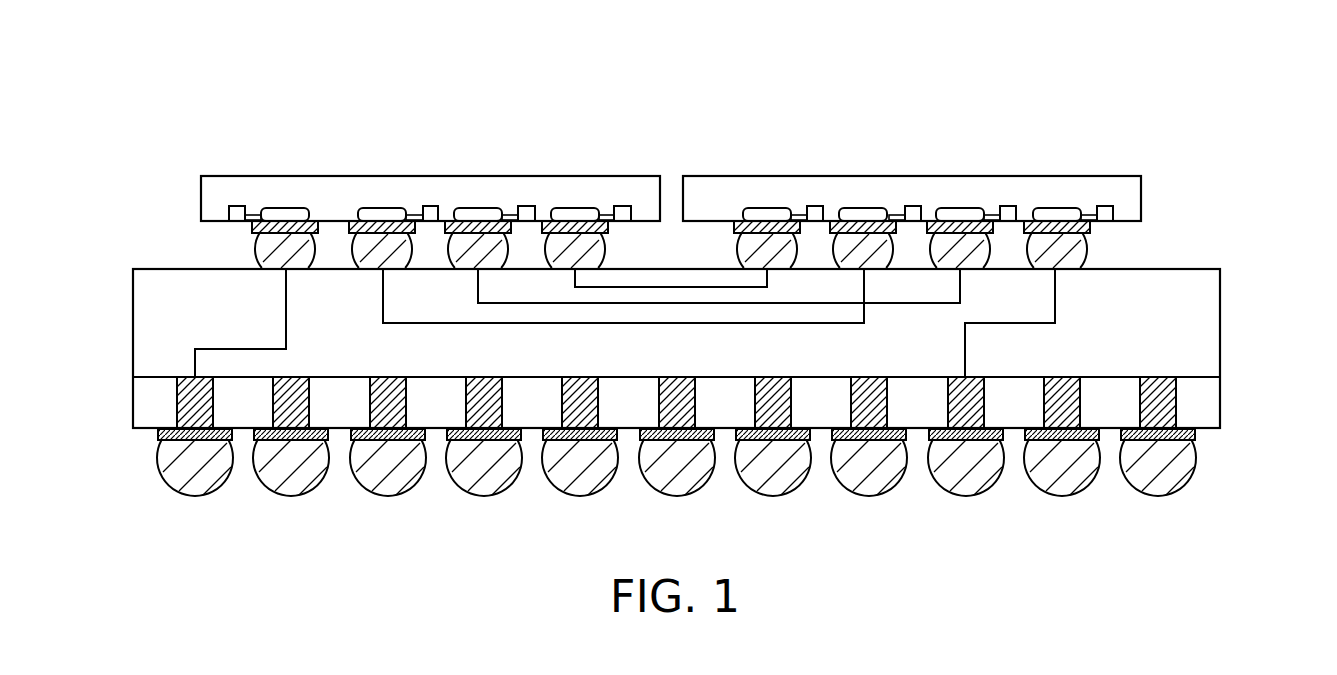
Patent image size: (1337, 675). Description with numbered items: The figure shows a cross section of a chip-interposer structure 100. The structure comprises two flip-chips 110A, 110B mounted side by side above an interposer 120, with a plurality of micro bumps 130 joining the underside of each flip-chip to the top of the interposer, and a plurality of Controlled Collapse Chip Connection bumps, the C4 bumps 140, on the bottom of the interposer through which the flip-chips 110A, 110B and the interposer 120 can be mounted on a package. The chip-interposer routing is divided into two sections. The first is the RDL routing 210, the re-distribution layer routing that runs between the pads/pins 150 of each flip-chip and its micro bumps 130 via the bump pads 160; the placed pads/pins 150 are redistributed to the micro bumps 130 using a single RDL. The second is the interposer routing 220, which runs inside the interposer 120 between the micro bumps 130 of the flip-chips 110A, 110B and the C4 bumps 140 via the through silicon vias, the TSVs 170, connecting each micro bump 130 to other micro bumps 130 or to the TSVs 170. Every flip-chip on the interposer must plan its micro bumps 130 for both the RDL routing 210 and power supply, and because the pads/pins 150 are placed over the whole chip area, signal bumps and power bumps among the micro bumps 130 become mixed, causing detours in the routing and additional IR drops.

The chip-interposer structure 100 is at (650, 47).
The flip-chip 110A is at (1141, 199).
The flip-chip 110B is at (201, 200).
The interposer 120 is at (1221, 323).
The micro bumps 130 is at (1086, 246).
The Controlled Collapse Chip Connection (C4) bumps 140 is at (1197, 455).
The pads/pins 150 is at (912, 206).
The bump pads 160 is at (284, 207).
The Through Silicon Vias (TSVs) 170 is at (1178, 403).
The RDL (Re-Distribution Layer) routing 210 is at (604, 212).
The interposer routing 220 is at (286, 312).